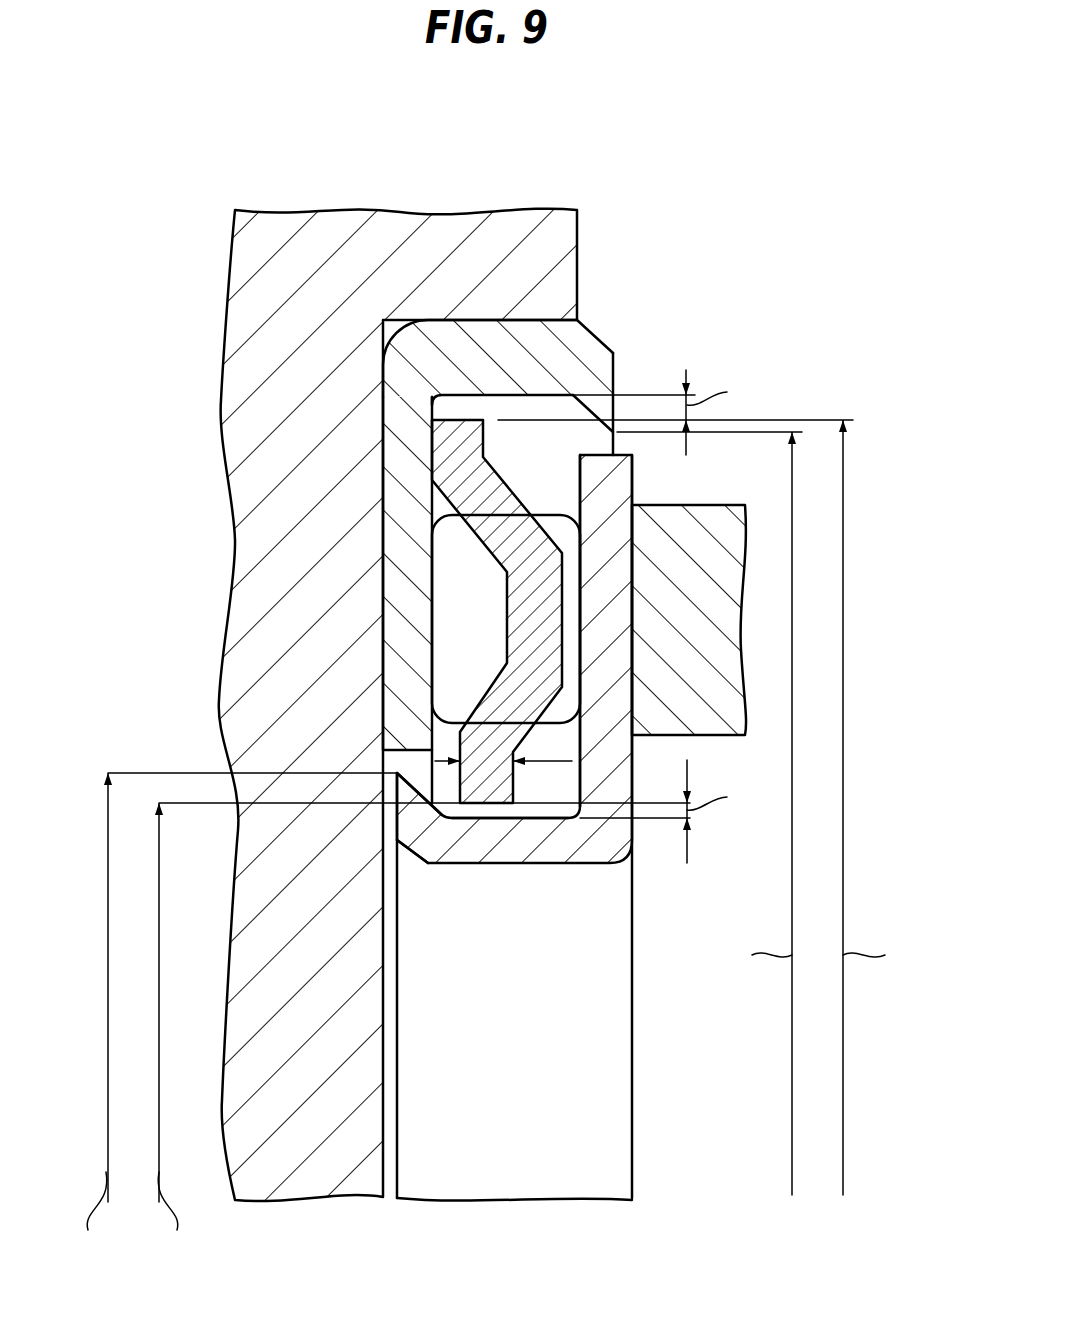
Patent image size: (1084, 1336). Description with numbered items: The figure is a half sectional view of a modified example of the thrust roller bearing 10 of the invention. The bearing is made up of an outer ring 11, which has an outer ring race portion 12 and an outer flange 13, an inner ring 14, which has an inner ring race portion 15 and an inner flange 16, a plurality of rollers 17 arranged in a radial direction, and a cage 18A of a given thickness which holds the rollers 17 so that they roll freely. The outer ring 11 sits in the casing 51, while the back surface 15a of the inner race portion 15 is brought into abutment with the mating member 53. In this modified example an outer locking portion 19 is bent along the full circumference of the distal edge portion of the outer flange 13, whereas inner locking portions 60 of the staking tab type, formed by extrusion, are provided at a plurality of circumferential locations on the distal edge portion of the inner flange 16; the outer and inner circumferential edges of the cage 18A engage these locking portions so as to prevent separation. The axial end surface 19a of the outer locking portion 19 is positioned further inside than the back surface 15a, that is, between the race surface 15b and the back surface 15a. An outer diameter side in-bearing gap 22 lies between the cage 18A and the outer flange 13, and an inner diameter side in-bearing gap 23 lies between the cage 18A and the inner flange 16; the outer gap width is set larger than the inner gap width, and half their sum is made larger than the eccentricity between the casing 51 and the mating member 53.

The thrust roller bearing 10 is at (712, 288).
The outer ring 11 is at (423, 470).
The outer ring race portion 12 is at (403, 670).
The outer flange 13 is at (512, 345).
The inner ring 14 is at (618, 855).
The inner ring race portion 15 is at (738, 636).
The back surface 15a is at (633, 573).
The race surface 15b is at (580, 597).
The inner flange 16 is at (540, 836).
The roller 17 is at (455, 620).
The cage 18A is at (480, 501).
The outer locking portion 19 is at (598, 407).
The axial end surface 19a is at (614, 410).
The outer diameter side in-bearing gap 22 is at (470, 407).
The inner diameter side in-bearing gap 23 is at (484, 812).
The casing 51 is at (577, 240).
The mating member 53 is at (700, 505).
The inner locking portion 60 is at (414, 792).